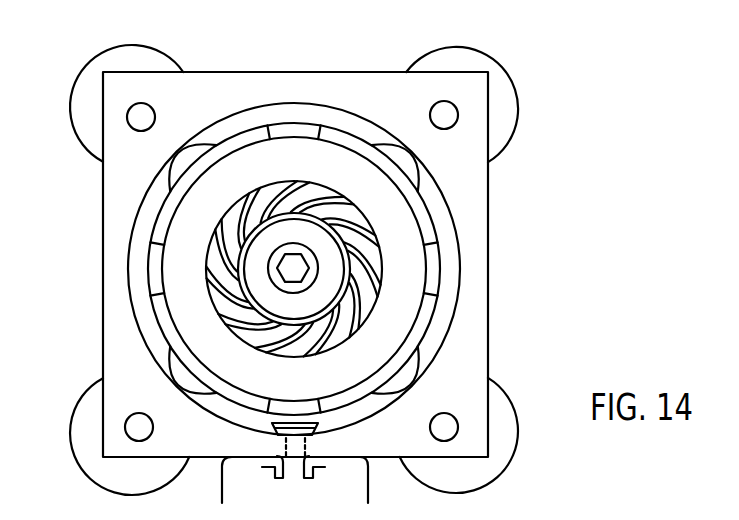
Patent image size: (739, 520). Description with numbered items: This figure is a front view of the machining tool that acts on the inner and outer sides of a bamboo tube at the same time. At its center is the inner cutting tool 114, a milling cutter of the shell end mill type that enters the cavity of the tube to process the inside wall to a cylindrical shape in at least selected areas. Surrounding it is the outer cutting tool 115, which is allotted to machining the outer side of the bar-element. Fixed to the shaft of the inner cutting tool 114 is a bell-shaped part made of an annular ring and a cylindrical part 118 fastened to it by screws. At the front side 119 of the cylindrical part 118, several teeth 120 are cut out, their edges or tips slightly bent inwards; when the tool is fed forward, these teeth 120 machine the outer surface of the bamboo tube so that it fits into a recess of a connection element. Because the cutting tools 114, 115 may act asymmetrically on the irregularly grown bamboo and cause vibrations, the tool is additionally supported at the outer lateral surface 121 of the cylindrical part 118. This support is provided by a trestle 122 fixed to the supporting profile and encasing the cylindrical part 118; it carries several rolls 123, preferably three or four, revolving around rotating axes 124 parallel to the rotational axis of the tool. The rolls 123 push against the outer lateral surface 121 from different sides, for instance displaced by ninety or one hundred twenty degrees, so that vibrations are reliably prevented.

The inner cutting tool 114 is at (307, 200).
The outer cutting tool 115 is at (298, 130).
The cylindrical part 118 is at (291, 227).
The front side 119 is at (247, 137).
The teeth 120 is at (150, 280).
The outer lateral surface 121 is at (342, 127).
The trestle 122 is at (467, 335).
The rolls 123 is at (122, 60).
The rotating axes 124 is at (128, 117).